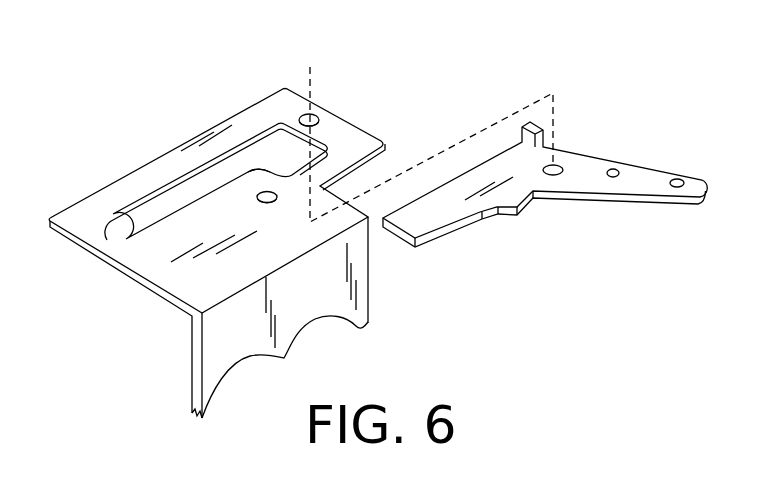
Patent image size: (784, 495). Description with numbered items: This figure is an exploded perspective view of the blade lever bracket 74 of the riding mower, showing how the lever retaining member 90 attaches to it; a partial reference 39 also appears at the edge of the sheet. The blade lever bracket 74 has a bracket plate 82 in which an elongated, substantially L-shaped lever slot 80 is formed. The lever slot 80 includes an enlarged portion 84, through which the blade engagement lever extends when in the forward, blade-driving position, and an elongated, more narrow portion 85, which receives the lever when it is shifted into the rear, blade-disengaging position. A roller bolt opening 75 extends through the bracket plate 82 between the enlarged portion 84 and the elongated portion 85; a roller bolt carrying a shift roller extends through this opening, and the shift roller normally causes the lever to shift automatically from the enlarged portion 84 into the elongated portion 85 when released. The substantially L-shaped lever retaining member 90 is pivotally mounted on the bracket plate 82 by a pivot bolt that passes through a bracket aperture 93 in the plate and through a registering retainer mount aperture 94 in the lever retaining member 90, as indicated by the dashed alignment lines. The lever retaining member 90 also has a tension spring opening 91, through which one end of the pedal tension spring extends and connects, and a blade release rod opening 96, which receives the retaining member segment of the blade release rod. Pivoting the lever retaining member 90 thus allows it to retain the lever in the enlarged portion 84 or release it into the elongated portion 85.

The frame member 39 is at (0, 28).
The blade lever bracket 74 is at (180, 372).
The roller bolt opening 75 is at (262, 200).
The lever slot 80 is at (238, 143).
The bracket plate 82 is at (177, 160).
The enlarged portion 84 is at (279, 158).
The elongated portion 85 is at (173, 218).
The bracket aperture 93 is at (311, 117).
The lever retaining member 90 is at (634, 144).
The tension spring opening 91 is at (679, 181).
The retainer mount aperture 94 is at (553, 168).
The blade release rod opening 96 is at (614, 177).